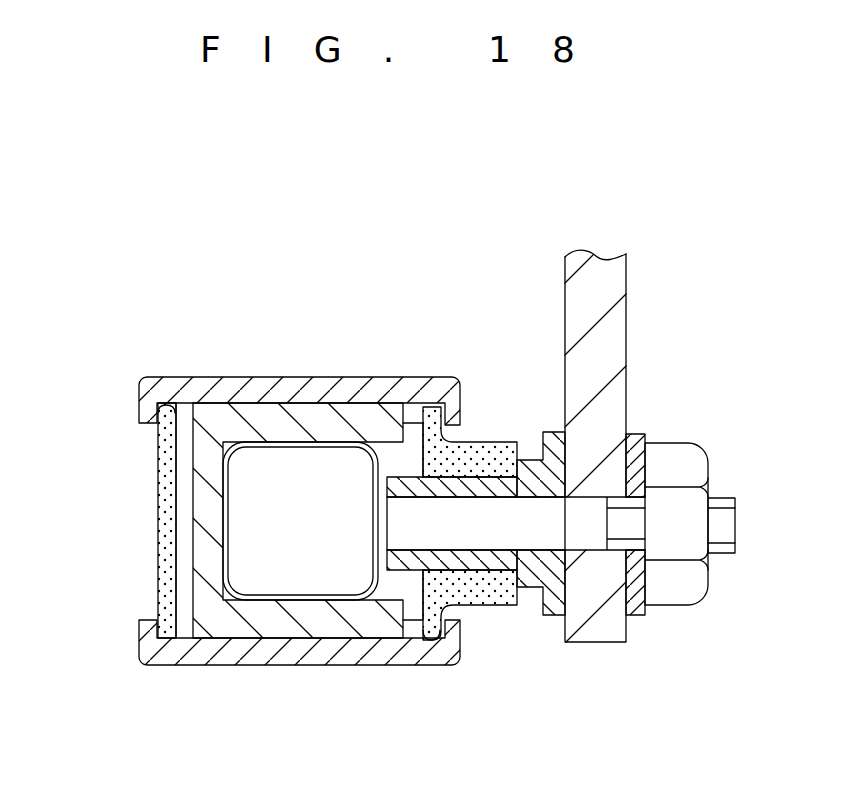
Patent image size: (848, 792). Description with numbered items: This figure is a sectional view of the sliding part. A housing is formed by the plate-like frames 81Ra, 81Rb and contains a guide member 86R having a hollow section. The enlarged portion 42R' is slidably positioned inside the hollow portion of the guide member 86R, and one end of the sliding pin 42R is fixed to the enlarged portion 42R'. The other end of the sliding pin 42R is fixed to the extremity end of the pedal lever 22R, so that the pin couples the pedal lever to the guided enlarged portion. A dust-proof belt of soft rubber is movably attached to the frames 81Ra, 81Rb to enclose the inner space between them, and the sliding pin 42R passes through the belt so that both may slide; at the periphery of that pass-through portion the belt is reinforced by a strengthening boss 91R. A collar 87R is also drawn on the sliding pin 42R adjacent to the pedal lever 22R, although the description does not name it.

The pedal lever 22R is at (623, 337).
The sliding pin 42R is at (561, 560).
The enlarged portion 42R' is at (300, 584).
The plate-like frame 81Ra is at (282, 376).
The plate-like frame 81Rb is at (193, 667).
The guide member 86R is at (205, 457).
The collar 87R is at (543, 432).
The strengthening boss 91R is at (488, 440).